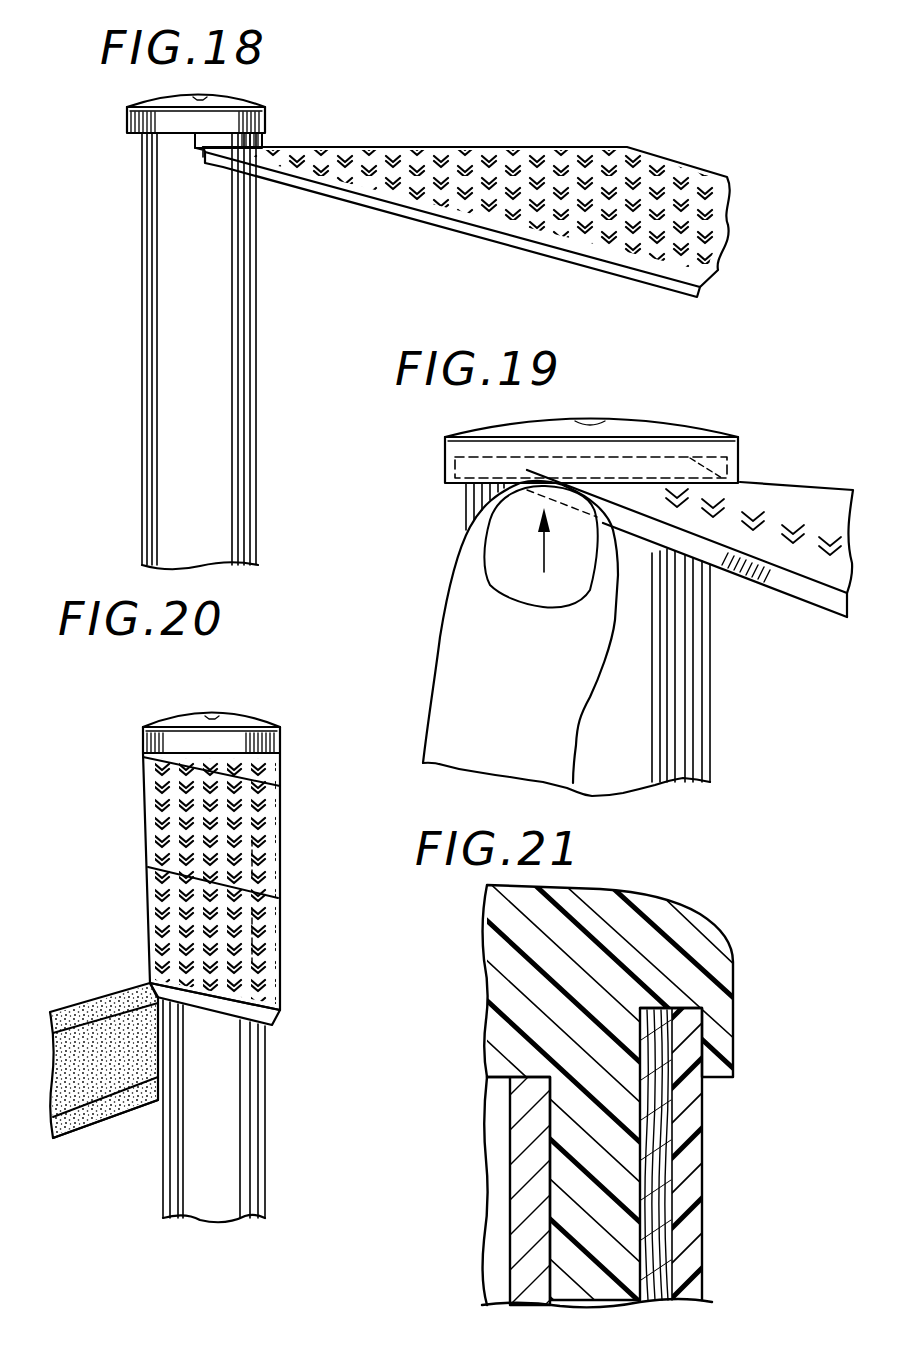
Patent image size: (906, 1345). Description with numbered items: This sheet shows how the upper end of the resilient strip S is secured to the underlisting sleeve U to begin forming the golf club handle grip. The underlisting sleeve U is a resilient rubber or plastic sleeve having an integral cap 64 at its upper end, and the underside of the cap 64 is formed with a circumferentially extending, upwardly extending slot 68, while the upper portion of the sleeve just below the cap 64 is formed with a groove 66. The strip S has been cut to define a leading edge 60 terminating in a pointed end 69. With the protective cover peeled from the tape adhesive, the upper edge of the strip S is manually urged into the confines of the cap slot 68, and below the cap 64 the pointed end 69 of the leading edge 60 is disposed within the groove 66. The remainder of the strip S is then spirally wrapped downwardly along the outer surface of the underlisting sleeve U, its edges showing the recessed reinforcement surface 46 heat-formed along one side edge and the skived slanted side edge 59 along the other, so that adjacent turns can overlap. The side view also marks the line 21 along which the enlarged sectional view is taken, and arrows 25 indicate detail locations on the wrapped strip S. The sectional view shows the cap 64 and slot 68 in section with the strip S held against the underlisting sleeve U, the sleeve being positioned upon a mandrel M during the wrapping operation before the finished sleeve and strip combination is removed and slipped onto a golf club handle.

In FIG. 18, the cap 64 is at (150, 111).
In FIG. 19, the cap 64 is at (637, 425).
In FIG. 20, the cap 64 is at (172, 728).
In FIG. 21, the cap 64 is at (660, 912).
In FIG. 18, the groove 66 is at (228, 136).
In FIG. 18, the pointed end 69 is at (212, 166).
In FIG. 18, the leading edge 60 is at (485, 150).
In FIG. 18, the resilient strip S is at (684, 173).
In FIG. 19, the resilient strip S is at (813, 575).
In FIG. 20, the resilient strip S is at (146, 840).
In FIG. 21, the resilient strip S is at (705, 1207).
In FIG. 18, the underlisting sleeve U is at (158, 363).
In FIG. 19, the underlisting sleeve U is at (690, 719).
In FIG. 20, the underlisting sleeve U is at (166, 1183).
In FIG. 21, the underlisting sleeve U is at (590, 1292).
In FIG. 19, the slot 68 is at (738, 448).
In FIG. 21, the slot 68 is at (692, 1043).
In FIG. 20, the line 21— 21 is at (213, 725).
In FIG. 20, the section line 25- 25 is at (258, 858).
In FIG. 20, the recessed reinforcement surface 46 is at (268, 1016).
In FIG. 20, the slanted side edge 59 is at (112, 1003).
In FIG. 21, the mandrel M is at (520, 1212).